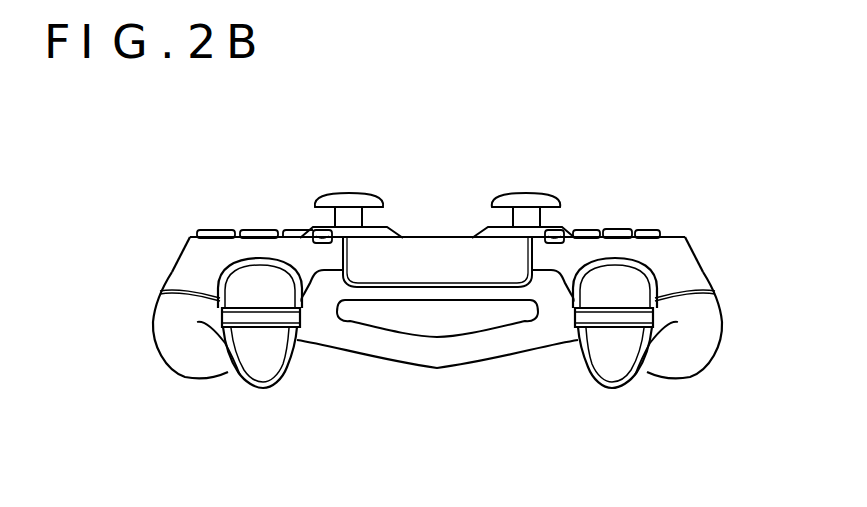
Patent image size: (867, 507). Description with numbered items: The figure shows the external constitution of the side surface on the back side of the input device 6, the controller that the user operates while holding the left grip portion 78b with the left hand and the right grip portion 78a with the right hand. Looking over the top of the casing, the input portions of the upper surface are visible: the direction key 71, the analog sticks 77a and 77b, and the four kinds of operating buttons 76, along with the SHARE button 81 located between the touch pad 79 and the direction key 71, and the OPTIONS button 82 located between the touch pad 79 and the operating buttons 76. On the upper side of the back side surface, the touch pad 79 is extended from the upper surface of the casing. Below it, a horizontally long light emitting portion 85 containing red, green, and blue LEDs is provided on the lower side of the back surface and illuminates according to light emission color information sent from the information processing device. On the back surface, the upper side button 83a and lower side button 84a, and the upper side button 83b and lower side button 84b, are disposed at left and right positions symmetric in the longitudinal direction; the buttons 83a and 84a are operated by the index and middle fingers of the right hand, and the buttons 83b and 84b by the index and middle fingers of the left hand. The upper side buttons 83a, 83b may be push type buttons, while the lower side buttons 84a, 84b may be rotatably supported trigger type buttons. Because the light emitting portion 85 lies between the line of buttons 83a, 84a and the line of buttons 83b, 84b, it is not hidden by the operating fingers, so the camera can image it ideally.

The input device 6 is at (441, 480).
The direction key 71 is at (646, 218).
The operating buttons 76 is at (231, 218).
The analog stick 77a is at (348, 200).
The analog stick 77b is at (529, 200).
The right grip portion 78a is at (198, 366).
The left grip portion 78b is at (677, 366).
The touch pad 79 is at (437, 253).
The SHARE button 81 is at (555, 234).
The OPTIONS button 82 is at (322, 233).
The upper side button 83a is at (248, 285).
The upper side button 83b is at (627, 287).
The lower side button 84a is at (260, 340).
The lower side button 84b is at (615, 342).
The light emitting portion 85 is at (470, 318).